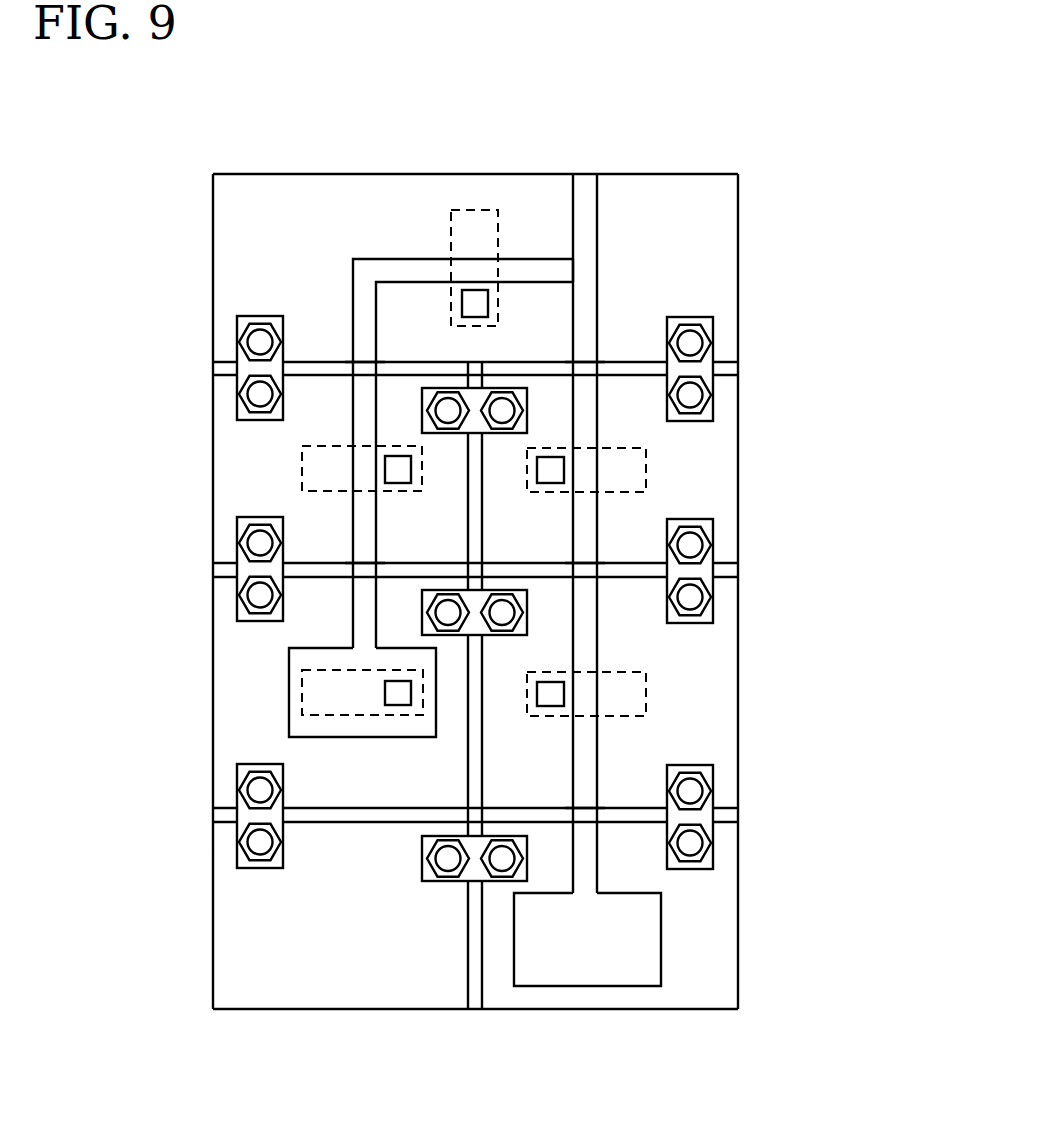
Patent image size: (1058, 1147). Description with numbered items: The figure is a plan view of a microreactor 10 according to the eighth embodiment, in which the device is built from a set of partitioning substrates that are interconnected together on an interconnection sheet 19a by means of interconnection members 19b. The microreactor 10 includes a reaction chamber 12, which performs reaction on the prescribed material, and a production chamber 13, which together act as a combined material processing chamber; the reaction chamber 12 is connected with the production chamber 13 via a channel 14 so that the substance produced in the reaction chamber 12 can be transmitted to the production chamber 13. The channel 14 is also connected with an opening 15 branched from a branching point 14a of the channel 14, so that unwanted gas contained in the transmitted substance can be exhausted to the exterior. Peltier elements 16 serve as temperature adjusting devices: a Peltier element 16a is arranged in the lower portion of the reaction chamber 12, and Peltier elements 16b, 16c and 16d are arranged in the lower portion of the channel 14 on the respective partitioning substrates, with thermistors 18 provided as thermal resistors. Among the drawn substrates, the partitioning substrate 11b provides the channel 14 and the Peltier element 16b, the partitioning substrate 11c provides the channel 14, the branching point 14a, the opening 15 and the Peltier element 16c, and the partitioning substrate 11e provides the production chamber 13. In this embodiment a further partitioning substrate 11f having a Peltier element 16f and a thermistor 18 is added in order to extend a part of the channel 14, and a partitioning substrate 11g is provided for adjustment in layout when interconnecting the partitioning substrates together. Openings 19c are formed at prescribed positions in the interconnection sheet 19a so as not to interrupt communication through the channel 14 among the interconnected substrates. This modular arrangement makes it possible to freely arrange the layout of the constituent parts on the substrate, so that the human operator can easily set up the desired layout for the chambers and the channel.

The microreactor 10 is at (832, 458).
The second partitioning substrate 11b is at (213, 537).
The third partitioning substrate 11c is at (213, 264).
The fifth partitioning substrate 11e is at (738, 893).
The partitioning substrate 11f is at (738, 650).
The partitioning substrate 11g is at (213, 913).
The reaction chamber 12 is at (289, 705).
The production chamber 13 is at (588, 986).
The channel 14 is at (400, 259).
The branching point 14a is at (590, 272).
The opening 15 is at (587, 174).
The Peltier element 16 is at (673, 499).
The Peltier element 16a is at (302, 688).
The Peltier element 16b is at (302, 460).
The Peltier element 16c is at (474, 210).
The Peltier element 16d is at (646, 467).
The Peltier element 16f is at (646, 690).
The thermistor 18 is at (476, 318).
The interconnection sheet 19a is at (306, 362).
The interconnection member 19b is at (260, 316).
The opening 19c is at (366, 374).